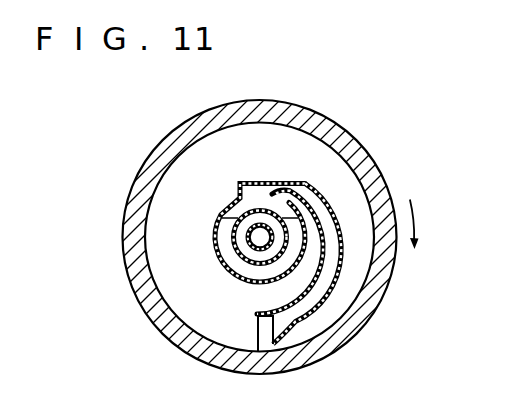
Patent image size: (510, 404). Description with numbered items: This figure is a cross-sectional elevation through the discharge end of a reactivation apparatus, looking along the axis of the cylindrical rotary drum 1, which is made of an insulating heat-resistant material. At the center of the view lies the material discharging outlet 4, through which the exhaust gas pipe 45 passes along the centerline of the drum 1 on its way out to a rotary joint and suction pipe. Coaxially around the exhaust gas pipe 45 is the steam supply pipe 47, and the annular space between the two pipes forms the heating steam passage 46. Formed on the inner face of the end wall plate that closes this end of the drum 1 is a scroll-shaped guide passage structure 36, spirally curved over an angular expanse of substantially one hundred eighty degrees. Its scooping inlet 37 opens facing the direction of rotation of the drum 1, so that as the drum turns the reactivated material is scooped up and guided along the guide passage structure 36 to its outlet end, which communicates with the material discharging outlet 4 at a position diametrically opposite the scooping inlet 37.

The rotary drum 1 is at (349, 134).
The material discharging outlet 4 is at (257, 203).
The scroll-shaped guide passage structure 36 is at (322, 282).
The scooping inlet 37 is at (258, 327).
The exhaust gas pipe 45 is at (251, 243).
The heating steam passage 46 is at (261, 251).
The steam supply pipe 47 is at (238, 243).